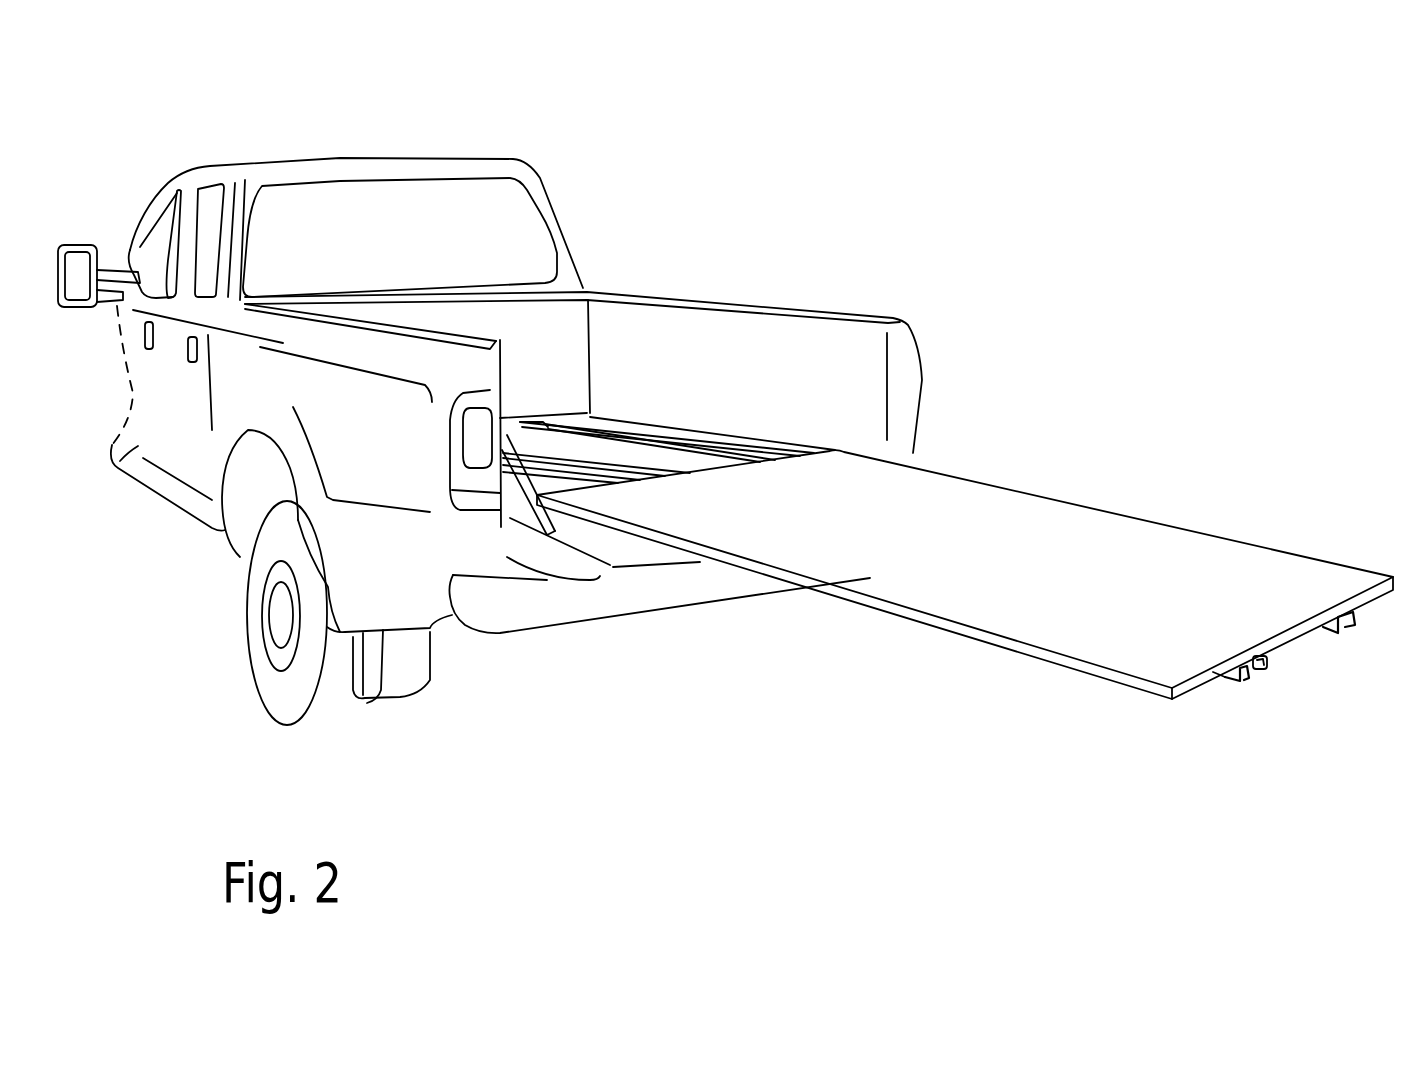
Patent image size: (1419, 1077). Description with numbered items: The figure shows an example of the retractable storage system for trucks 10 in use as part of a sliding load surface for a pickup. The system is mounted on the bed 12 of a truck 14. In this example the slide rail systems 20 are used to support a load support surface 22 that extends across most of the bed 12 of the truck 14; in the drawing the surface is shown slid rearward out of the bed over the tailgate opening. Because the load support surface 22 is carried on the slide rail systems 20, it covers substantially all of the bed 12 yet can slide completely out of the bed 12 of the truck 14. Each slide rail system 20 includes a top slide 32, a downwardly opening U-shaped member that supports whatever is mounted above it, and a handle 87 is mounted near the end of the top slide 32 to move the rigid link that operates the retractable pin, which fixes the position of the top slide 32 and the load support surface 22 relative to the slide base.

The retractable storage system for trucks 10 is at (625, 250).
The bed 12 is at (713, 348).
The truck 14 is at (445, 154).
The slide rail system 20 is at (1332, 630).
The load support surface 22 is at (1036, 581).
The top slide 32 is at (1222, 684).
The handle 87 is at (1275, 665).